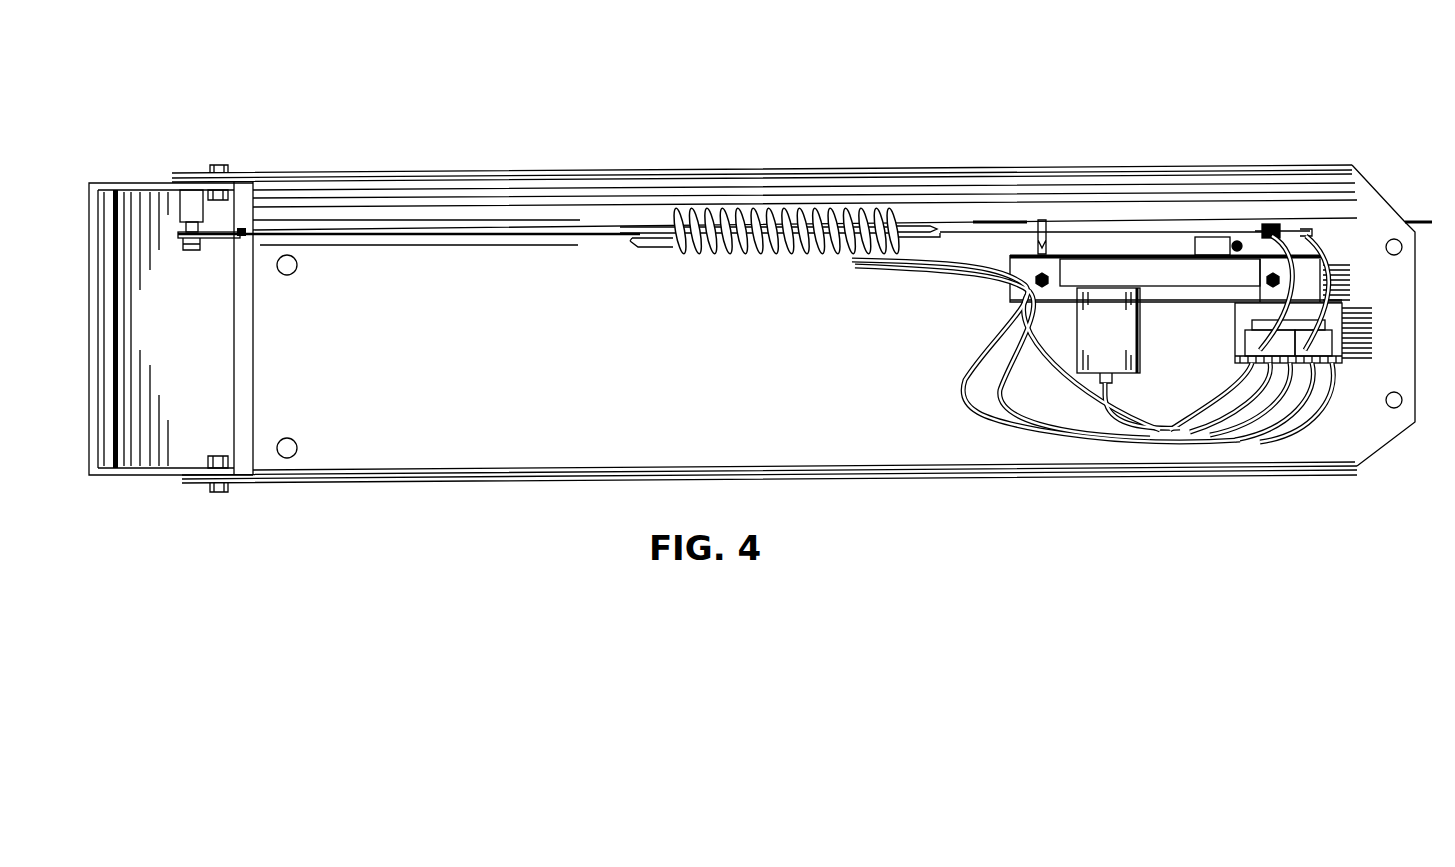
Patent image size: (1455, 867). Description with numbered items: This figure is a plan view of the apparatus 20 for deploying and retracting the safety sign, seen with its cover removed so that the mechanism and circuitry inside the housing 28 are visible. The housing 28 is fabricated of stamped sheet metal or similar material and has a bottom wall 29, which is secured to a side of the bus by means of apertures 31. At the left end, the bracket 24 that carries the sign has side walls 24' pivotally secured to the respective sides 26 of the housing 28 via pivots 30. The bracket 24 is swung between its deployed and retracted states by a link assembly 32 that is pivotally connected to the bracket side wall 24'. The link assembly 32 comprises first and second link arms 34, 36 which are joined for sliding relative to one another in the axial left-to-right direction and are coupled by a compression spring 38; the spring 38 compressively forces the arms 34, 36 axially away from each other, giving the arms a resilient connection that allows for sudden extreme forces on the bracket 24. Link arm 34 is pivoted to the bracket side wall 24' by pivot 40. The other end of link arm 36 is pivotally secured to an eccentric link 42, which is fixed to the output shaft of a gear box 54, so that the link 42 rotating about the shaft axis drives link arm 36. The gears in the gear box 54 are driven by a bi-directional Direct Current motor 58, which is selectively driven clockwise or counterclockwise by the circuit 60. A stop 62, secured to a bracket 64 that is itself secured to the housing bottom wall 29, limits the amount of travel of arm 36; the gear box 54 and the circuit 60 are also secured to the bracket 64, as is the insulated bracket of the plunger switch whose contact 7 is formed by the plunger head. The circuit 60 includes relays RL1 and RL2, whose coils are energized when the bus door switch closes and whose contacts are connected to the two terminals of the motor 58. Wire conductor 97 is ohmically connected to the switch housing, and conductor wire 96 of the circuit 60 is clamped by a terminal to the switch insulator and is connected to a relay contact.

The apparatus 20 is at (531, 145).
The bracket 24 is at (156, 281).
The side walls 24' is at (198, 304).
The sides 26 is at (372, 184).
The housing 28 is at (967, 494).
The bottom wall 29 is at (403, 462).
The pivots 30 is at (226, 166).
The apertures 31 is at (291, 254).
The link assembly 32 is at (438, 240).
The first link arm 34 is at (625, 228).
The second link arm 36 is at (1097, 231).
The compression spring 38 is at (790, 214).
The pivot 40 is at (196, 255).
The eccentric link 42 is at (1216, 237).
The gear box 54 is at (1120, 280).
The bi-directional Direct Current motor 58 is at (1105, 345).
The circuit 60 is at (944, 417).
The stop 62 is at (1039, 232).
The bracket 64 is at (1177, 250).
The conductor wire 96 is at (1320, 240).
The wire conductor 97 is at (1287, 233).
The contact 7 is at (989, 202).
The relay RL1 is at (1290, 360).
The relay RL2 is at (1258, 358).